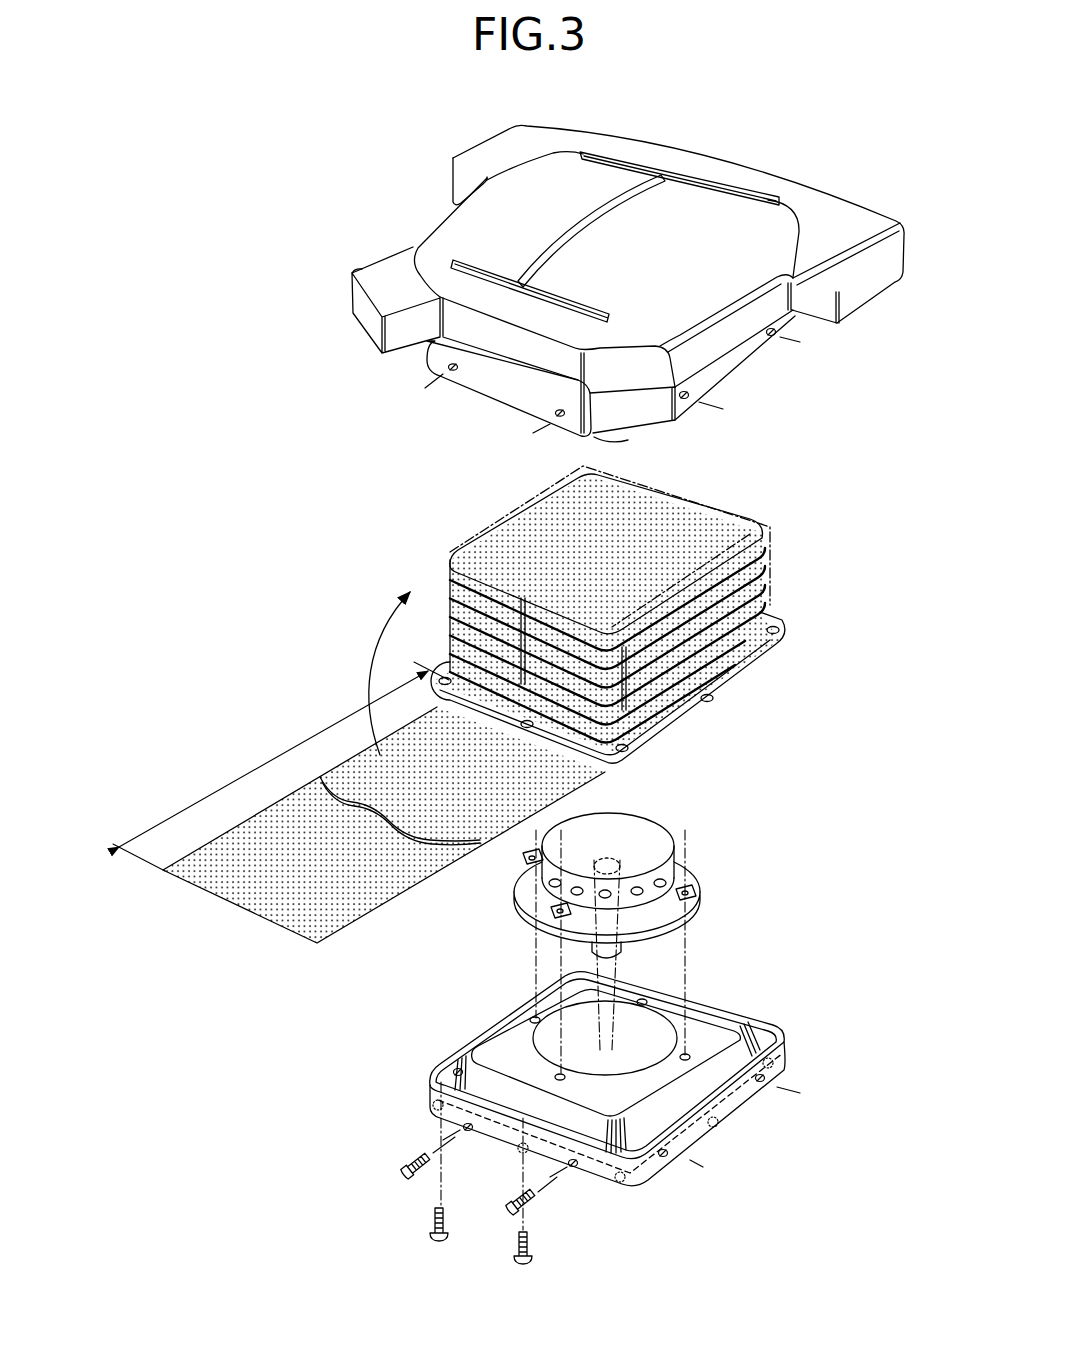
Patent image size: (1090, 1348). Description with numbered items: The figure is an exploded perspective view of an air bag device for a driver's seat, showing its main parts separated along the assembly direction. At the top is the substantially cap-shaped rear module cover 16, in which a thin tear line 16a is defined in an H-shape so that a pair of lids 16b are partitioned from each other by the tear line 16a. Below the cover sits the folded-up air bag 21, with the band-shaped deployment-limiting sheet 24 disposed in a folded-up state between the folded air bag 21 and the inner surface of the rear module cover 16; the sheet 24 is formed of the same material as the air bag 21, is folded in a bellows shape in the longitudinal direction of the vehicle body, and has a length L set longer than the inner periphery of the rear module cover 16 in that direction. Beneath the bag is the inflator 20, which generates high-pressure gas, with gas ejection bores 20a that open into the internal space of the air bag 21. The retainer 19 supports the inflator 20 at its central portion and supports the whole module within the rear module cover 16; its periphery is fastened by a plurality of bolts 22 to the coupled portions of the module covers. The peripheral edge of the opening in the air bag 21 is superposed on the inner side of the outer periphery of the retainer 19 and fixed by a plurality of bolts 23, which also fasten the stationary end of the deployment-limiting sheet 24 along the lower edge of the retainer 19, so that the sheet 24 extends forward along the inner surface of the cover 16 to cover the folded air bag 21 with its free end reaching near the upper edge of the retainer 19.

The rear module cover 16 is at (628, 271).
The tear line 16a is at (477, 268).
The lids 16b is at (585, 203).
The retainer 19 is at (762, 1004).
The inflator 20 is at (657, 919).
The gas ejection bores 20a is at (578, 894).
The air bag 21 is at (438, 541).
The bolts 22 is at (405, 1163).
The bolts 23 is at (433, 1220).
The deployment-limiting sheet 24 is at (690, 487).